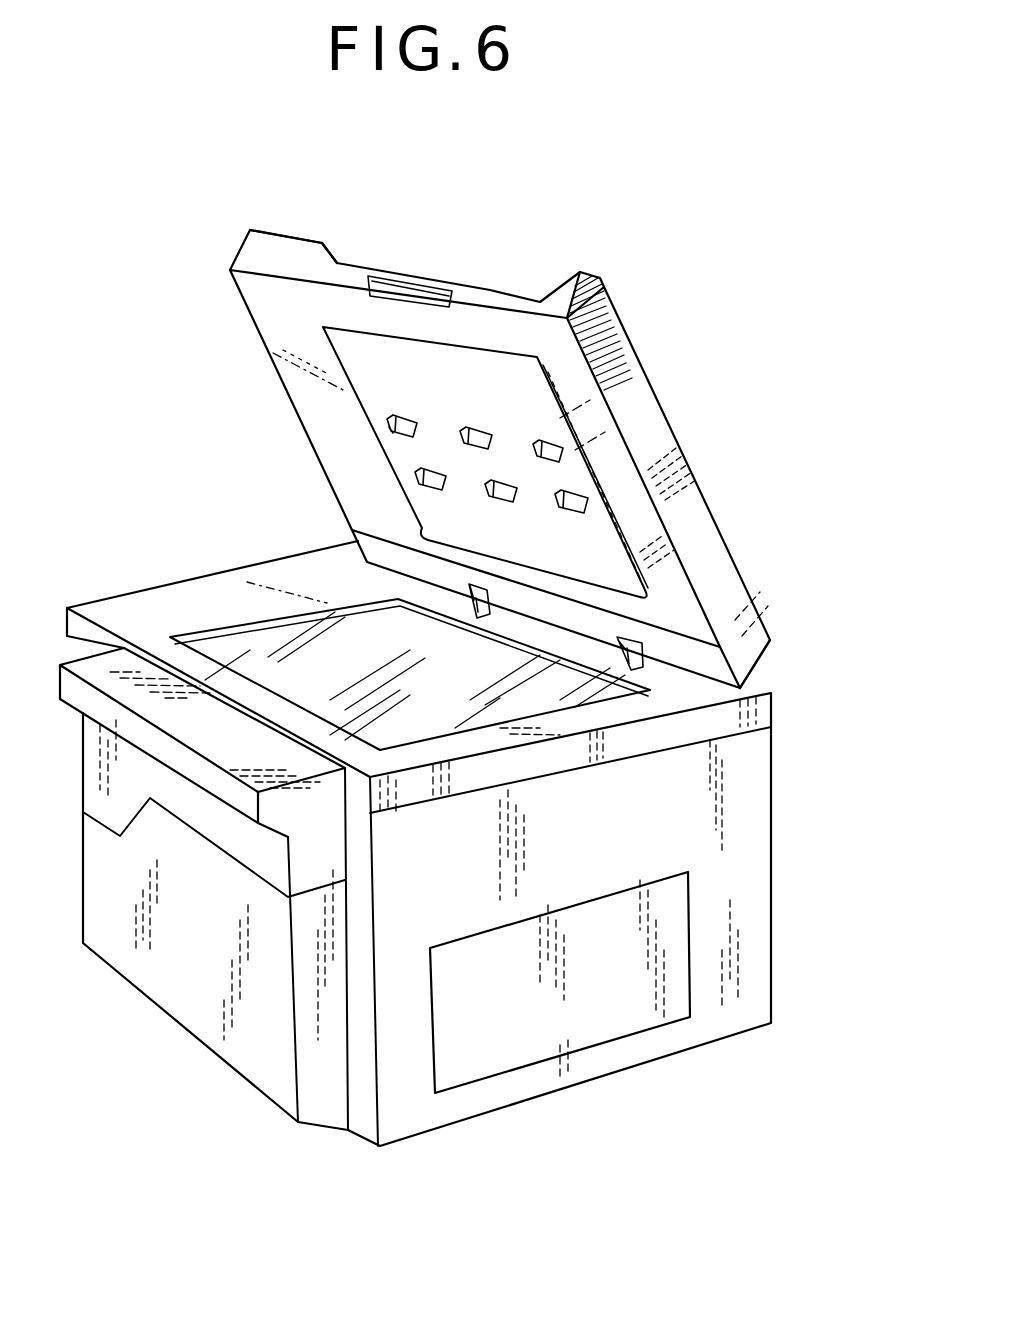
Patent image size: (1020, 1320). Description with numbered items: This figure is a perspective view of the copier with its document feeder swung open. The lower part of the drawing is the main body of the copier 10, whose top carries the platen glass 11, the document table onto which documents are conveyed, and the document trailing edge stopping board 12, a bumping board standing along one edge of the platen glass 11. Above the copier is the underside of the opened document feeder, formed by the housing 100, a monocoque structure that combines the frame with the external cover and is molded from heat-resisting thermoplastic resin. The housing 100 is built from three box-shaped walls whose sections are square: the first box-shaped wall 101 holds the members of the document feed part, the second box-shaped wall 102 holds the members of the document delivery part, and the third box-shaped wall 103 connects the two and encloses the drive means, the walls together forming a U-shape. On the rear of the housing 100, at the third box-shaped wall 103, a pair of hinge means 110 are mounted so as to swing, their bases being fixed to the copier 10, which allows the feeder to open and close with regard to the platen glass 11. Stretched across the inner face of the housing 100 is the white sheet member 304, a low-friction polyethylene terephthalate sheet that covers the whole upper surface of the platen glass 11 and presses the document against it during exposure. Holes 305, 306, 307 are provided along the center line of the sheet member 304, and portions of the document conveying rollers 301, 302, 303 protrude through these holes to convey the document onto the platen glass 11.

The main body of a copier 10 is at (826, 854).
The platen glass 11 is at (233, 652).
The document trailing edge stopping board 12 is at (127, 596).
The housing 100 is at (683, 518).
The first box-shaped wall 101 is at (283, 236).
The second box-shaped wall 102 is at (630, 333).
The third box-shaped wall 103 is at (772, 650).
The hinge means 110 is at (628, 669).
The white sheet member 304 is at (539, 462).
The document conveying roller 301 is at (389, 425).
The document conveying roller 302 is at (398, 418).
The document conveying roller 303 is at (536, 440).
The hole 305 is at (397, 433).
The hole 306 is at (465, 444).
The hole 307 is at (534, 453).